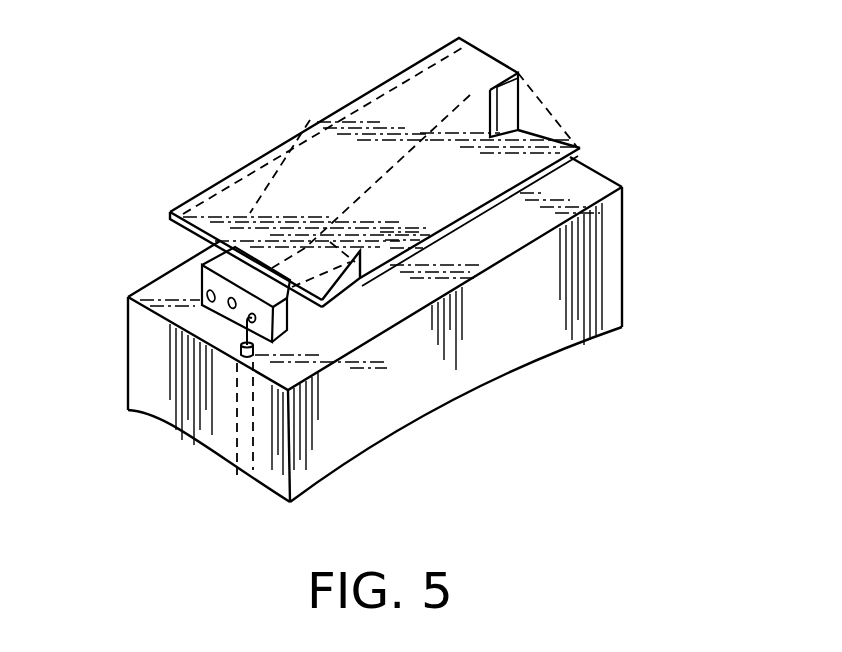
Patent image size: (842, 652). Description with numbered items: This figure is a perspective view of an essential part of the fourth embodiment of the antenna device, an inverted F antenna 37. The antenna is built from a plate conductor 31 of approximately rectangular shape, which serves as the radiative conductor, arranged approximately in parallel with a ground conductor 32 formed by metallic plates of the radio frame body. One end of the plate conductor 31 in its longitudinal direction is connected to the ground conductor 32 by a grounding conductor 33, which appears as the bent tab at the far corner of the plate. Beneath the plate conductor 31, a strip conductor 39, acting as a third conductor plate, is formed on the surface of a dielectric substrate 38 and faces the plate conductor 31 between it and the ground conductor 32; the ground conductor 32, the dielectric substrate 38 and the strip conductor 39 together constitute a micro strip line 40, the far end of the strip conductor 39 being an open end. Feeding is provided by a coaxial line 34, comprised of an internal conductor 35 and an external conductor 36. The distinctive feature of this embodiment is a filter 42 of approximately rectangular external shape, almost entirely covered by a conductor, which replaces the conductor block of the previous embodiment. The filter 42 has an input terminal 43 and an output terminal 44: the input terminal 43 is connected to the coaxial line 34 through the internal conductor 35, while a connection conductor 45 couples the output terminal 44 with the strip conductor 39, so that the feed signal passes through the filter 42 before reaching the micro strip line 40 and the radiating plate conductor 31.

The plate conductor 31 is at (312, 153).
The ground conductor 32 is at (587, 185).
The grounding conductor 33 is at (494, 90).
The coaxial line 34 is at (245, 412).
The internal conductor 35 is at (240, 326).
The external conductor 36 is at (242, 349).
The inverted F antenna 37 is at (492, 48).
The dielectric substrate 38 is at (289, 314).
The strip conductor 39 is at (250, 276).
The micro strip line 40 is at (308, 320).
The filter 42 is at (293, 327).
The input terminal 43 is at (222, 338).
The output terminal 44 is at (207, 300).
The connection conductor 45 is at (202, 271).